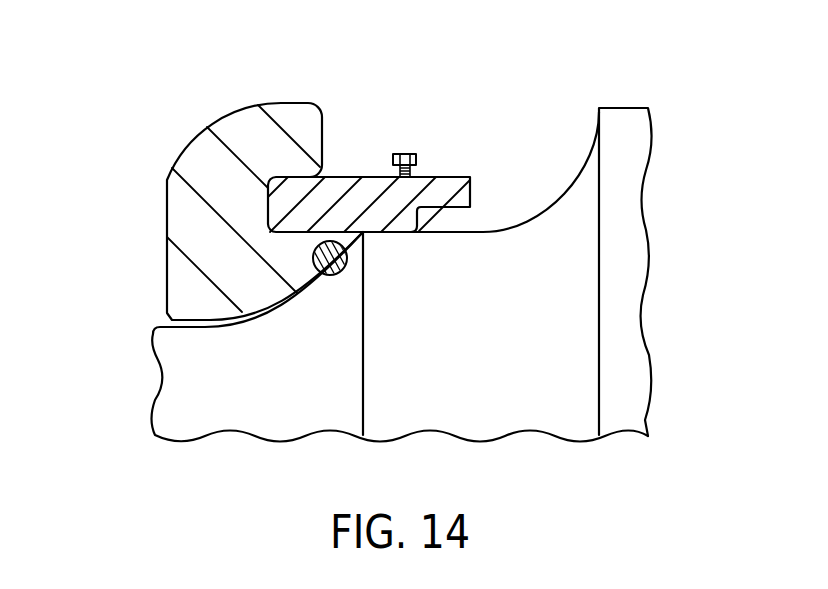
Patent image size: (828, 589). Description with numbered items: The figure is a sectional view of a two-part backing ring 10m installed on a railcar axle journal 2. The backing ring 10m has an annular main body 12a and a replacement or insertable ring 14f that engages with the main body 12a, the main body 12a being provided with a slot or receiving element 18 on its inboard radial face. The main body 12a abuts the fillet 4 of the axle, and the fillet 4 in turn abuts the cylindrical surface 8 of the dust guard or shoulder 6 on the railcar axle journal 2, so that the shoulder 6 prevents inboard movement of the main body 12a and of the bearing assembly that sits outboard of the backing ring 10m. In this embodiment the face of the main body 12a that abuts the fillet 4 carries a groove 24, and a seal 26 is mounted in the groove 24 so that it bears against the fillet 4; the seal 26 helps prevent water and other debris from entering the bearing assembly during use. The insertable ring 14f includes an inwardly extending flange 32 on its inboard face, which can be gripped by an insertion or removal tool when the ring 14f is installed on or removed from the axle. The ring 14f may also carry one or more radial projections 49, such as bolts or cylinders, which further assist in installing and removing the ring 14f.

The two-part backing ring 10m is at (116, 71).
The main body 12a is at (212, 153).
The insertable ring 14f is at (338, 185).
The inwardly extending flange 32 is at (442, 185).
The radial projections 49 is at (407, 154).
The cylindrical surface 8 is at (447, 230).
The dust guard or shoulder 6 is at (575, 327).
The groove 24 is at (333, 270).
The seal 26 is at (341, 250).
The slot or receiving element 18 is at (278, 226).
The railcar axle journal 2 is at (183, 388).
The fillet 4 is at (263, 320).